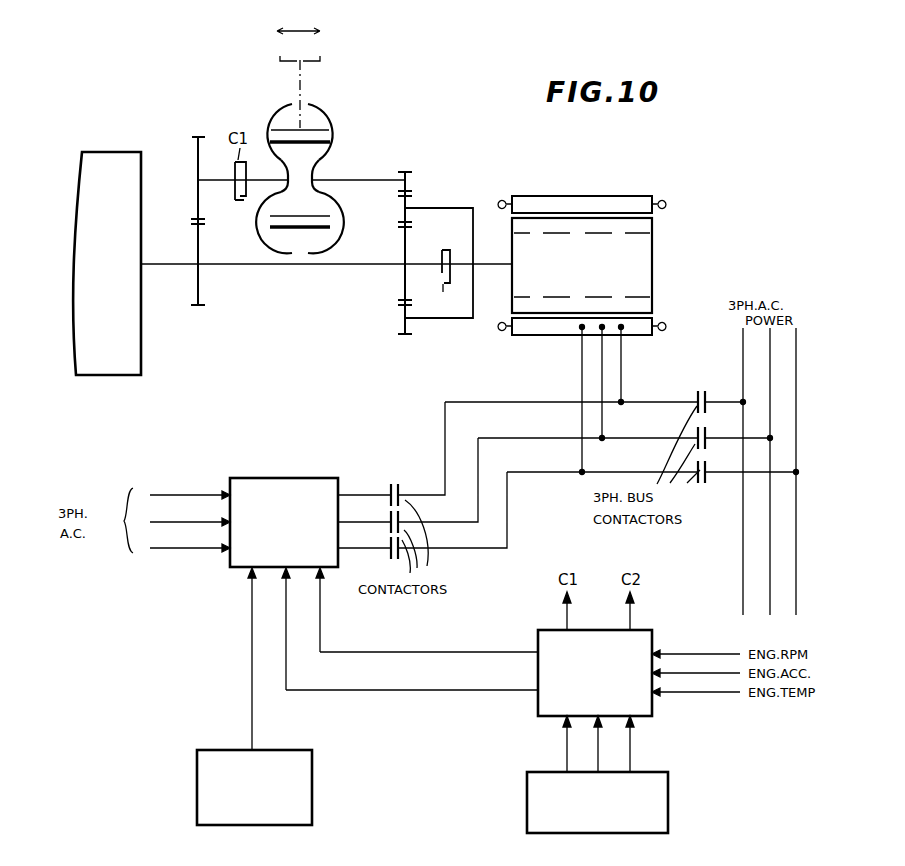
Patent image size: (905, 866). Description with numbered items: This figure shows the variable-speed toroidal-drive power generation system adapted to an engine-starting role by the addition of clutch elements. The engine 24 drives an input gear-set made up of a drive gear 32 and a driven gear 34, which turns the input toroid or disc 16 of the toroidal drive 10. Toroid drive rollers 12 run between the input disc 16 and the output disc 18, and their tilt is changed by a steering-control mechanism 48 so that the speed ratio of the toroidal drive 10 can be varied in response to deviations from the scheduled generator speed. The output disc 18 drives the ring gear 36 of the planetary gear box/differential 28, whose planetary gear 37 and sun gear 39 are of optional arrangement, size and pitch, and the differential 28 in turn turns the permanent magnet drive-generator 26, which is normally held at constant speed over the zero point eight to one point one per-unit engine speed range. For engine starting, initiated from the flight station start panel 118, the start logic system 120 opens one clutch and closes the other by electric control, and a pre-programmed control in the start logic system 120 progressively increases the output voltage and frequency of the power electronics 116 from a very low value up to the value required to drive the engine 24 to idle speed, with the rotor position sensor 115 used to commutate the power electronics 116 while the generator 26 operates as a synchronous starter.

The engine 24 is at (116, 140).
The driven gear 34 is at (196, 153).
The drive gear 32 is at (197, 285).
The toroidal drive 10 is at (302, 130).
The input toroid or disc 16 is at (272, 241).
The toroid drive rollers 12 is at (327, 224).
The output disc 18 is at (332, 240).
The steering-control mechanism 48 is at (299, 77).
The ring gear 36 is at (407, 183).
The sun gear 39 is at (398, 290).
The planetary gear 37 is at (400, 325).
The planetary gear box/differential 28 is at (375, 340).
The permanent magnet drive-generator 26 is at (582, 265).
The power electronics 116 is at (287, 478).
The start logic system 120 is at (652, 632).
The flight station start panel 118 is at (670, 803).
The rotor position sensor 115 is at (197, 788).